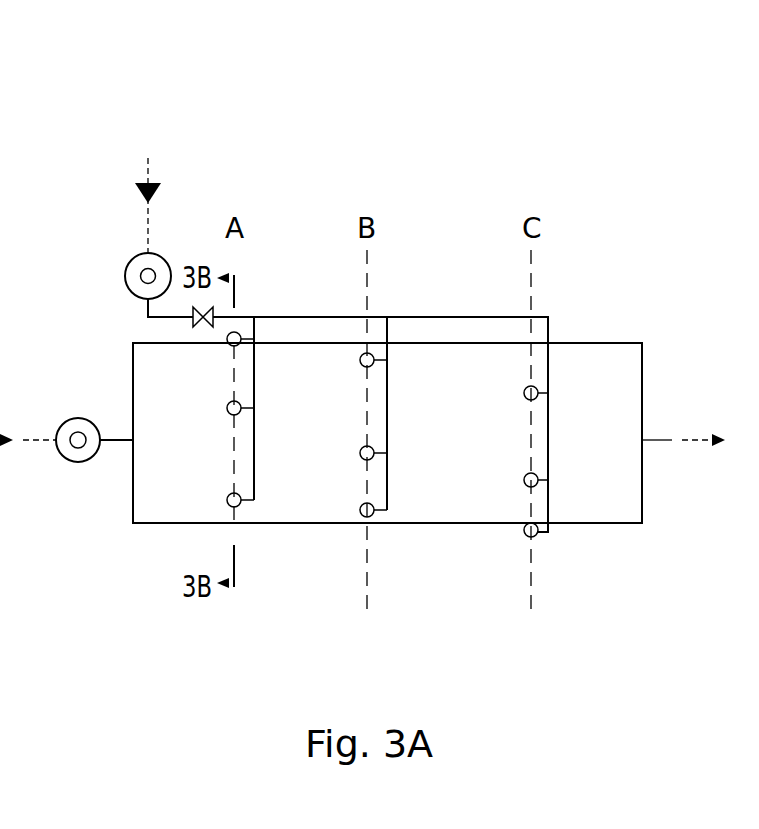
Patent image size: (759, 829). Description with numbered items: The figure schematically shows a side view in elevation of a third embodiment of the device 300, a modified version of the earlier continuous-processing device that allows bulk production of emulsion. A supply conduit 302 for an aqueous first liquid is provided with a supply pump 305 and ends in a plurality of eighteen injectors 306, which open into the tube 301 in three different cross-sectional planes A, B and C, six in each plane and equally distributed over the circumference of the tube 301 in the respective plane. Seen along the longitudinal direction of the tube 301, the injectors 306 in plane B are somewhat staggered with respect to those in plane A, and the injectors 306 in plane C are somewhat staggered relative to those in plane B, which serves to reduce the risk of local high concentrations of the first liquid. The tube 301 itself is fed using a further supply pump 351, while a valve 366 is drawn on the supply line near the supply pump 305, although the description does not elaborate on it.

The device 300 is at (585, 68).
The tube 301 is at (590, 344).
The supply conduit 302 is at (326, 317).
The supply pump 305 is at (127, 267).
The injectors 306 is at (228, 338).
The supply pump 351 is at (88, 462).
The valve 366 is at (196, 308).